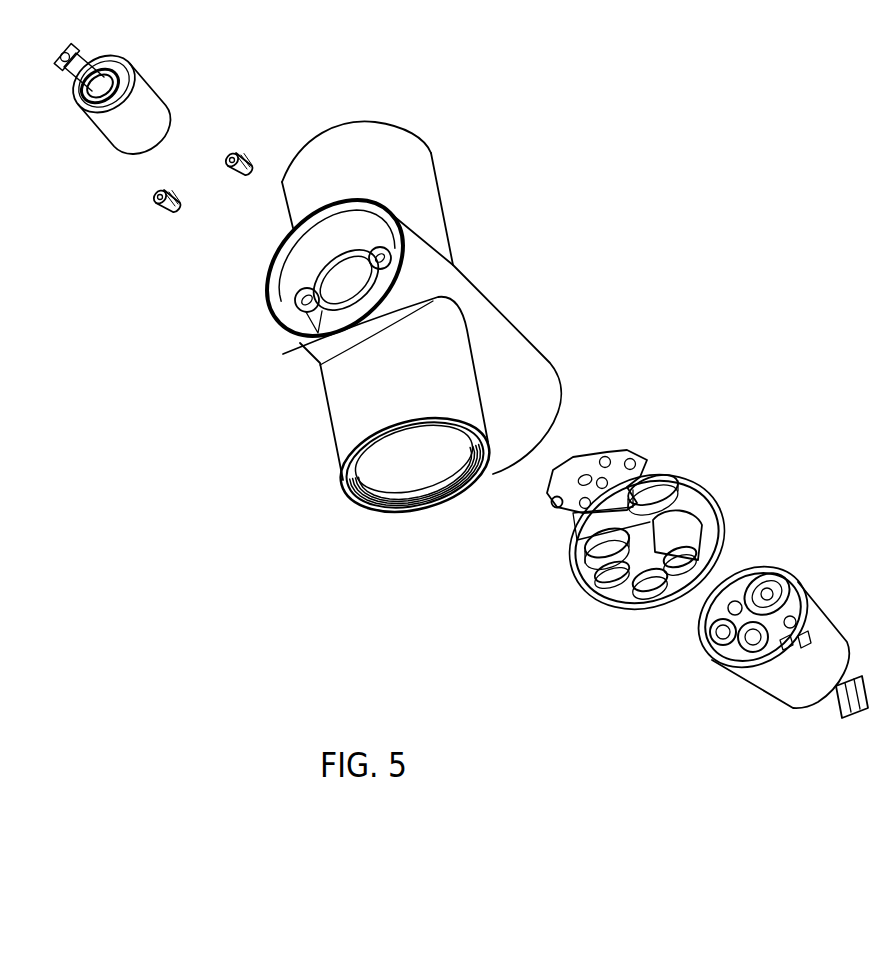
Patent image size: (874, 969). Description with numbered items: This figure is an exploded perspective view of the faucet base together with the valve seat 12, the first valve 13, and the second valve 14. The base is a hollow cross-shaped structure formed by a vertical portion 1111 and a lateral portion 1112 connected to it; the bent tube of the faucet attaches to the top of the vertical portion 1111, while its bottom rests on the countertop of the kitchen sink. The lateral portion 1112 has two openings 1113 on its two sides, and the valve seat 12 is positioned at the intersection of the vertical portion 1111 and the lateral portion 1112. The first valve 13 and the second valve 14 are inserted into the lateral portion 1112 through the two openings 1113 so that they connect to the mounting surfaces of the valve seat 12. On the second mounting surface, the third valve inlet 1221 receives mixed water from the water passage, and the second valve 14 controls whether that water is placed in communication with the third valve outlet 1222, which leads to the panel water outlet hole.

The second valve 14 is at (127, 123).
The vertical portion 1111 is at (412, 178).
The lateral portion 1112 is at (513, 363).
The openings 1113 is at (288, 276).
The valve seat 12 is at (690, 483).
The third valve inlet 1221 is at (630, 457).
The third valve outlet 1222 is at (578, 495).
The first valve 13 is at (787, 692).